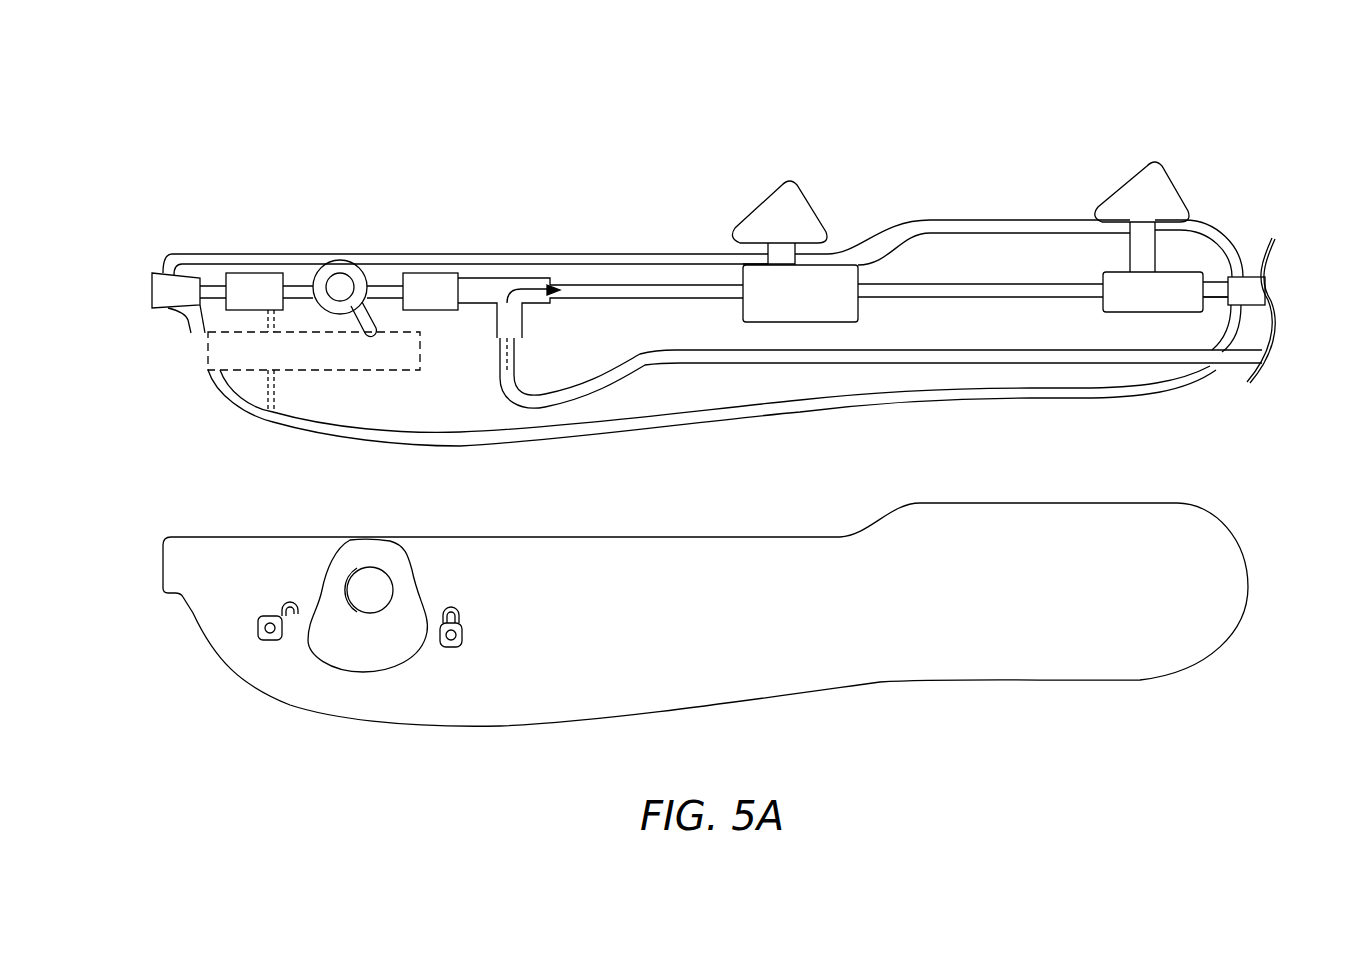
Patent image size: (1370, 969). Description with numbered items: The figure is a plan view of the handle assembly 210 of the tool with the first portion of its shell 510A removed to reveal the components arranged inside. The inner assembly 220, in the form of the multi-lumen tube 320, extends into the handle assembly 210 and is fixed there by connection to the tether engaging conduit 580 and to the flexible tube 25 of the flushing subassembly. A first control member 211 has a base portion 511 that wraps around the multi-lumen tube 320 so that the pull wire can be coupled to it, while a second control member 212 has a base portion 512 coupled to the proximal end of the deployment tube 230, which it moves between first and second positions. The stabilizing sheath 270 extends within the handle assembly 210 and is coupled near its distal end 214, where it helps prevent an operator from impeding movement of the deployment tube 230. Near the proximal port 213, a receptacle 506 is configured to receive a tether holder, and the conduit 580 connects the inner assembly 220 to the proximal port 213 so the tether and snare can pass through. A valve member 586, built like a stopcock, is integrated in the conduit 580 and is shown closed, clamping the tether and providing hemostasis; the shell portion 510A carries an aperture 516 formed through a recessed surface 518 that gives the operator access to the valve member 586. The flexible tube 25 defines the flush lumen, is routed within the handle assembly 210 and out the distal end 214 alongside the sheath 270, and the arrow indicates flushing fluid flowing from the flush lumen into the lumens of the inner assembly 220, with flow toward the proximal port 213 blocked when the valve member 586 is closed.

The handle assembly 210 is at (403, 137).
The first control member 211 is at (773, 208).
The second control member 212 is at (1137, 202).
The proximal port 213 is at (158, 290).
The distal end 214 is at (1230, 386).
The inner assembly 220 is at (843, 251).
The multi-lumen tube 320 is at (680, 292).
The deployment tube 230 is at (1215, 297).
The flexible tube 25 is at (700, 360).
The stabilizing sheath 270 is at (1248, 287).
The receptacle 506 is at (220, 347).
The base portion 511 is at (817, 300).
The base portion 512 is at (1159, 300).
The tether engaging conduit 580 is at (342, 255).
The valve member 586 is at (375, 255).
The first portion of shell 510A is at (705, 634).
The aperture 516 is at (358, 588).
The recessed surface 518 is at (400, 615).